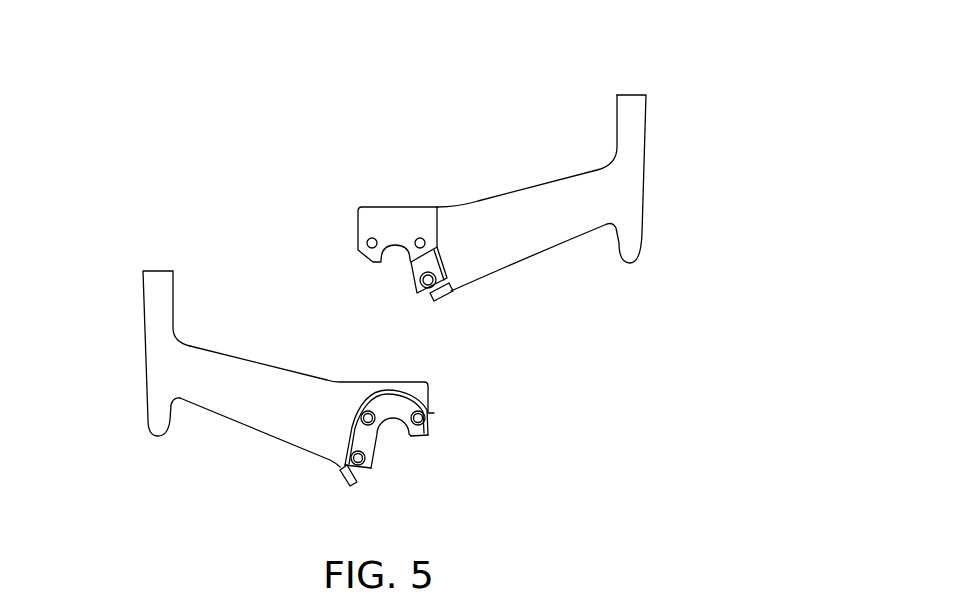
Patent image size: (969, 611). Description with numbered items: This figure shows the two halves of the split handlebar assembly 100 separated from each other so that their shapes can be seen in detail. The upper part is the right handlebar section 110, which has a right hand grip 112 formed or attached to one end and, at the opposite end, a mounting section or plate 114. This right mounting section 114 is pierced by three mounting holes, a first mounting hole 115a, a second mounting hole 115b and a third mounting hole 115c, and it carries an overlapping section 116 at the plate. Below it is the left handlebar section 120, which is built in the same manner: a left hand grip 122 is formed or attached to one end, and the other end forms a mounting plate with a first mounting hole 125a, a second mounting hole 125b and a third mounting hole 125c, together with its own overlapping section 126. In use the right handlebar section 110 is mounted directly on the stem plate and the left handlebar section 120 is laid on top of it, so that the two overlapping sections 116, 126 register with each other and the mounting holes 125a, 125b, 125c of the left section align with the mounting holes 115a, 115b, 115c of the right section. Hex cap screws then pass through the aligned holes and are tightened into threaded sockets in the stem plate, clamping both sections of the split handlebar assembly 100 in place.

The split handlebar assembly 100 is at (180, 73).
The right handlebar section 110 is at (660, 128).
The right hand grip 112 is at (642, 233).
The right mounting section 114 is at (388, 265).
The first mounting hole 115a is at (420, 238).
The second mounting hole 115b is at (447, 278).
The third mounting hole 115c is at (367, 242).
The overlapping section 116 is at (388, 198).
The left handlebar section 120 is at (120, 280).
The left hand grip 122 is at (173, 313).
The first mounting hole 125a is at (368, 411).
The second mounting hole 125b is at (345, 484).
The third mounting hole 125c is at (430, 434).
The overlapping section 126 is at (392, 432).